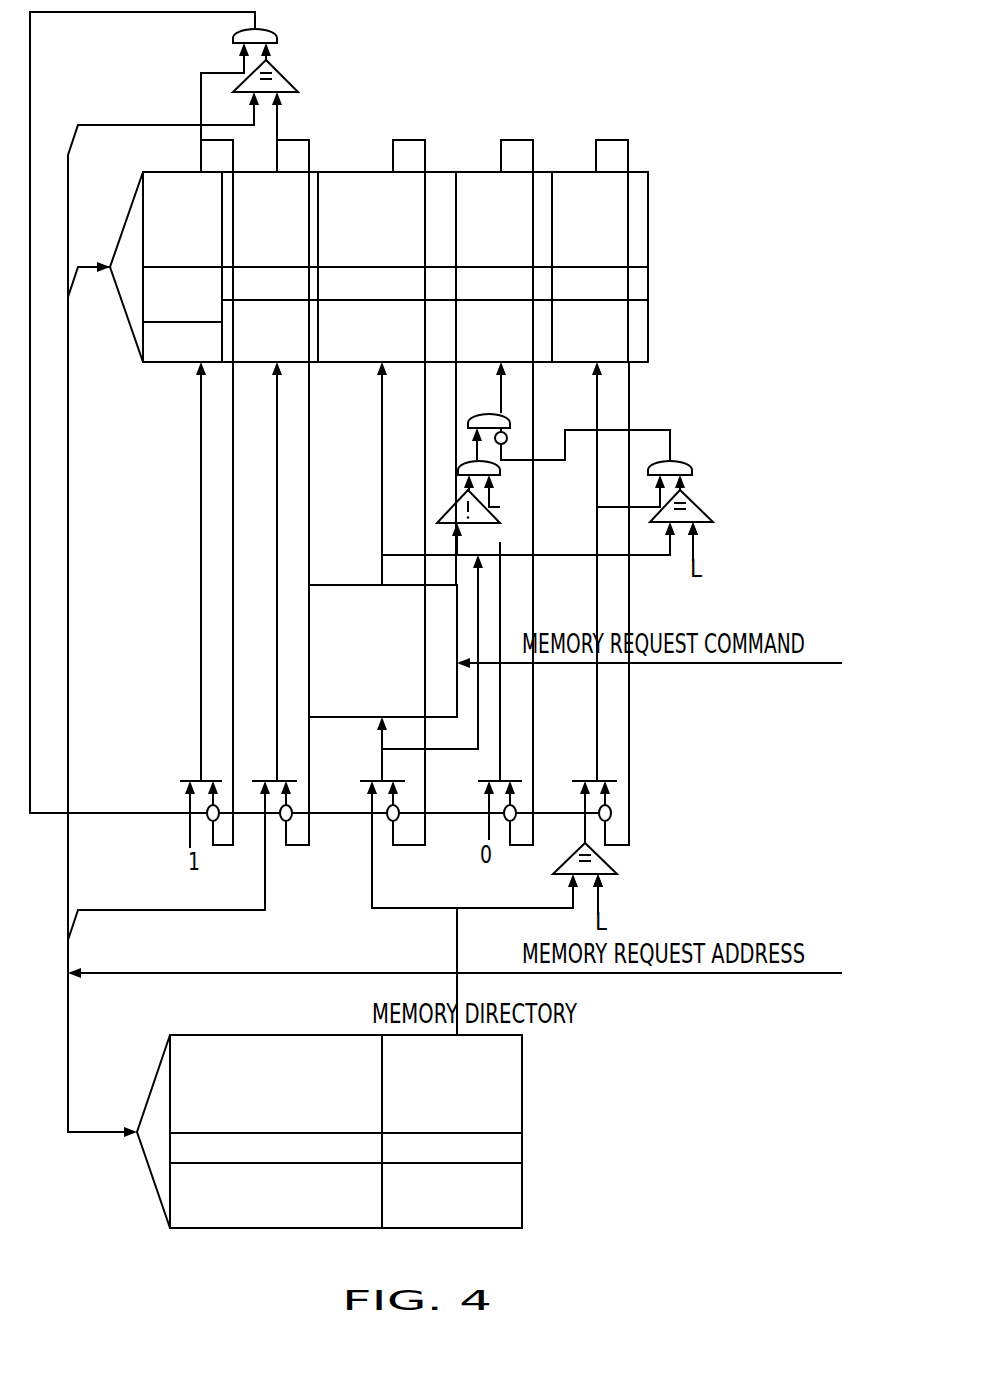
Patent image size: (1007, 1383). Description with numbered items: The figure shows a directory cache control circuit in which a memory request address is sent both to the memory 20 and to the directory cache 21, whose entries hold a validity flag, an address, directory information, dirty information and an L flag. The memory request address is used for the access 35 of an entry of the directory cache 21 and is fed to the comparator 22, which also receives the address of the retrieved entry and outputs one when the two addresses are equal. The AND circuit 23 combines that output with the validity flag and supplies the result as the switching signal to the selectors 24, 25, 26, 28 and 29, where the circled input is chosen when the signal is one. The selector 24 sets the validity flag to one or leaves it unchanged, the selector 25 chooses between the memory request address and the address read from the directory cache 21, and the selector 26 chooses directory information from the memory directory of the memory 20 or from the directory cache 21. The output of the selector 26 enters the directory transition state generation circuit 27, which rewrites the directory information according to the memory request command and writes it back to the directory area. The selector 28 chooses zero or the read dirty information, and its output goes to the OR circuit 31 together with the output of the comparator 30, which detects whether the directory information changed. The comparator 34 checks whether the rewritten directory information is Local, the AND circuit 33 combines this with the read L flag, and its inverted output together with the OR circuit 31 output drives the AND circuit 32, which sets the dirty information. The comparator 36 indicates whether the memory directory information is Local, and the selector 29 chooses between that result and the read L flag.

The memory 20 is at (329, 1113).
The directory cache 21 is at (649, 206).
The comparator 22 is at (284, 75).
The AND circuit 23 is at (279, 38).
The selector 24 is at (195, 787).
The selector 25 is at (273, 787).
The selector 26 is at (378, 787).
The directory transition state generation circuit 27 is at (355, 584).
The selector 28 is at (495, 787).
The selector 29 is at (592, 787).
The comparator 30 is at (450, 506).
The OR circuit 31 is at (459, 465).
The AND circuit 32 is at (470, 412).
The AND circuit 33 is at (684, 462).
The comparator 34 is at (698, 508).
The access 35 is at (100, 285).
The comparator 36 is at (605, 862).